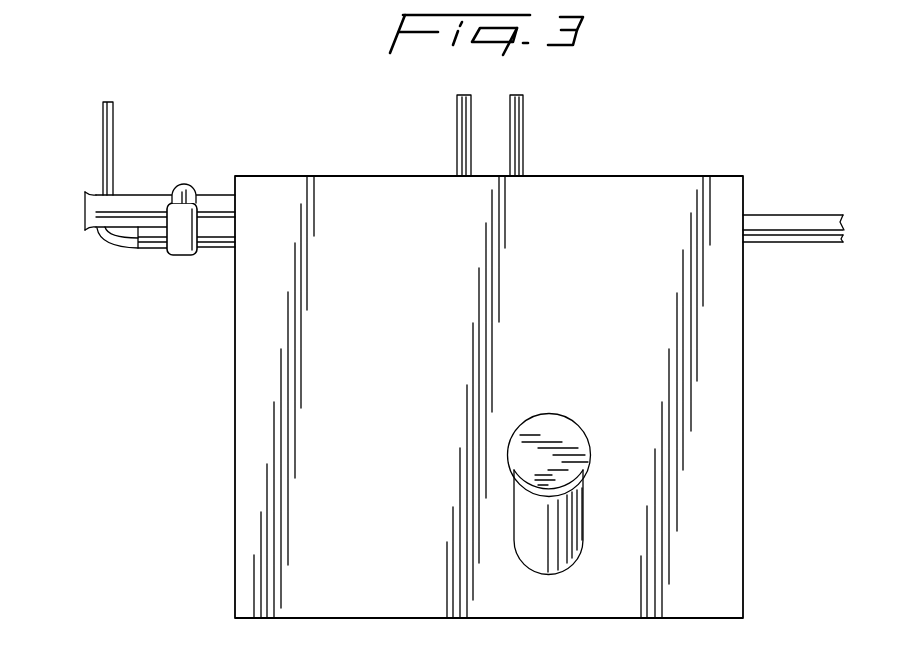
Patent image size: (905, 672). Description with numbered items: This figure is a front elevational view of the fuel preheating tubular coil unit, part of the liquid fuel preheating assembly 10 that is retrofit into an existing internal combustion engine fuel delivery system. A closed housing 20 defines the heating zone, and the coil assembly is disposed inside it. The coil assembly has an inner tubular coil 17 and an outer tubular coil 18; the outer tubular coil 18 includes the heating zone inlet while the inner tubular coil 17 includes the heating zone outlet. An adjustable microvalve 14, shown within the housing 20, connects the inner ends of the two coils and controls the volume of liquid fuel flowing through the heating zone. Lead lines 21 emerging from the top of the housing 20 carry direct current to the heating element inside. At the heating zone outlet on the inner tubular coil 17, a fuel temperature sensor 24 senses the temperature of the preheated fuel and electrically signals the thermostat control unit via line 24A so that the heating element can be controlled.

The heating assembly 10 is at (210, 437).
The microvalve 14 is at (585, 513).
The inner tubular coil 17 is at (218, 195).
The outer tubular coil 18 is at (807, 245).
The closed housing 20 is at (356, 339).
The lead lines 21 is at (522, 125).
The fuel temperature sensor 24 is at (185, 168).
The line 24A is at (102, 139).